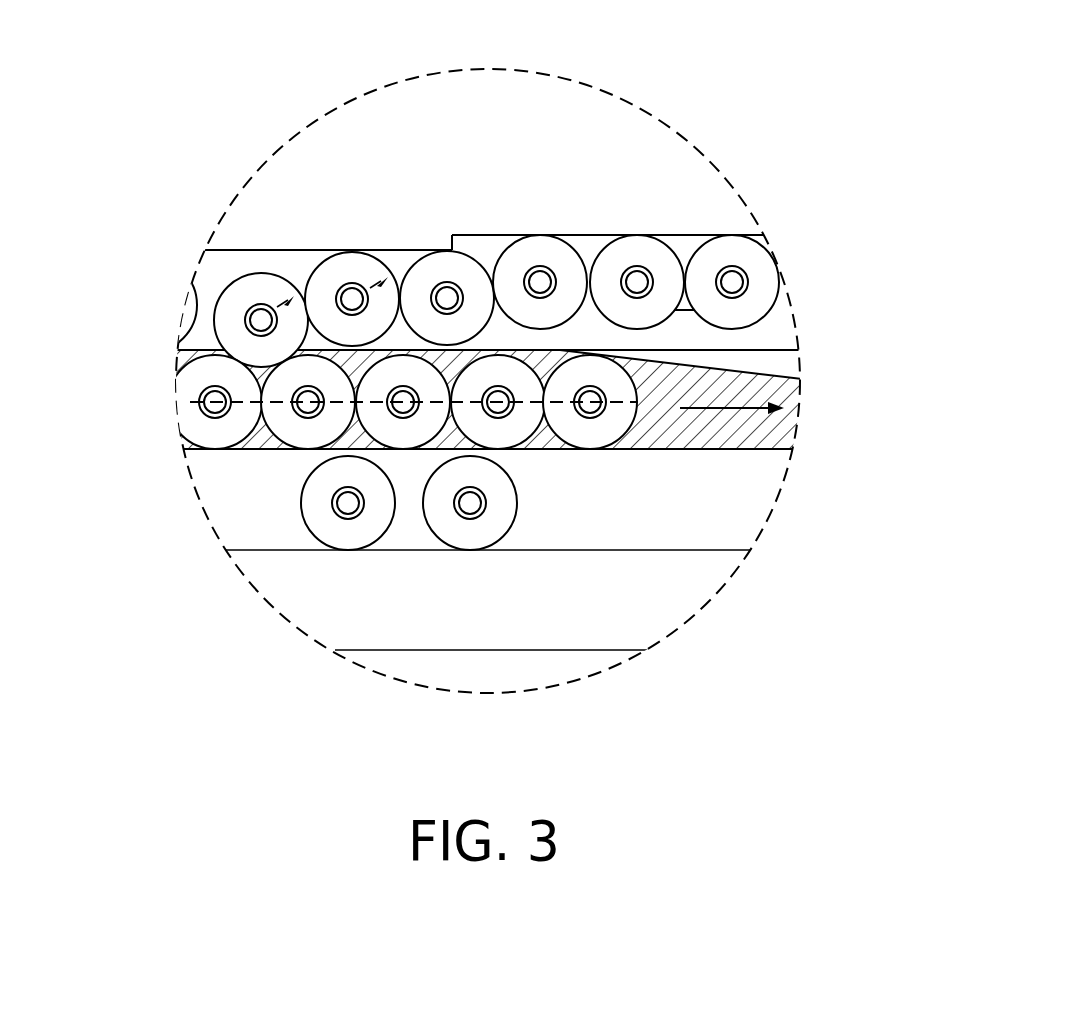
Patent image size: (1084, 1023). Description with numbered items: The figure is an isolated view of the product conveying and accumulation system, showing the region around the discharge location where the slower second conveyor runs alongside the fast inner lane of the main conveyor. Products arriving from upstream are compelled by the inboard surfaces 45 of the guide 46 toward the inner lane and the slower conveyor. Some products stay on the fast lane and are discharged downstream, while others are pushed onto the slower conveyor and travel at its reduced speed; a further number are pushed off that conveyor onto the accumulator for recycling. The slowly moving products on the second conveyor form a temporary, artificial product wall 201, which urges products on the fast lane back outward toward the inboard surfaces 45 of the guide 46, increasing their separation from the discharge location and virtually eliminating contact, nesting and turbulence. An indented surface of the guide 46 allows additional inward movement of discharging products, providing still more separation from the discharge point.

The inboard surfaces 45 is at (398, 248).
The guide 46 is at (537, 108).
The product wall 201 is at (192, 402).